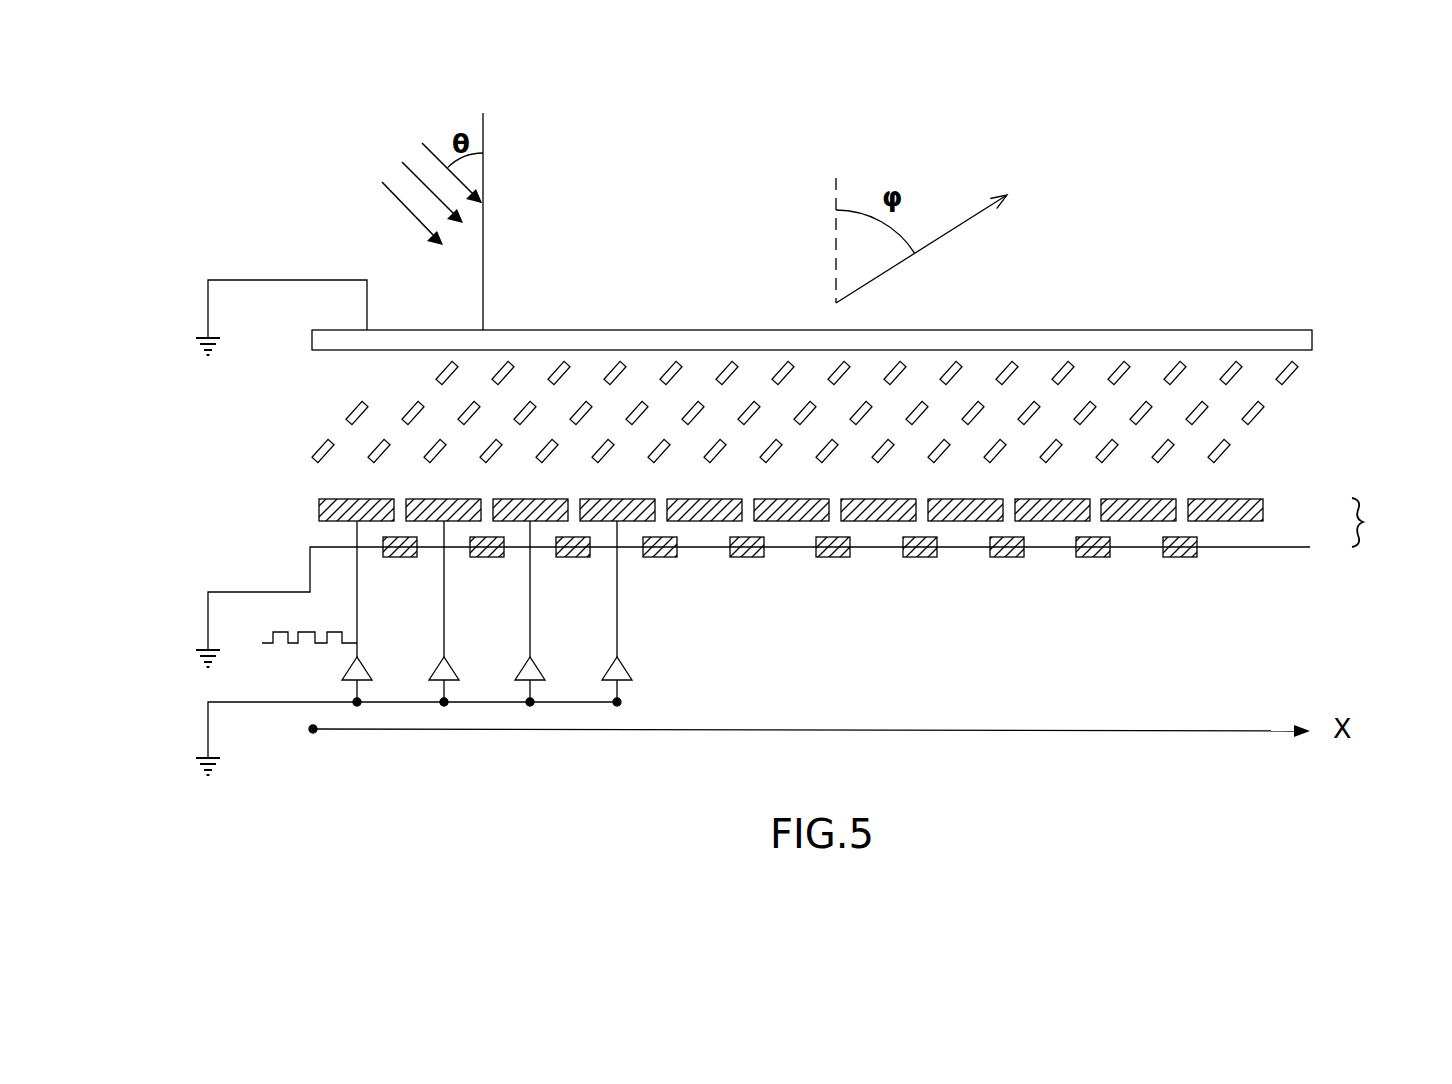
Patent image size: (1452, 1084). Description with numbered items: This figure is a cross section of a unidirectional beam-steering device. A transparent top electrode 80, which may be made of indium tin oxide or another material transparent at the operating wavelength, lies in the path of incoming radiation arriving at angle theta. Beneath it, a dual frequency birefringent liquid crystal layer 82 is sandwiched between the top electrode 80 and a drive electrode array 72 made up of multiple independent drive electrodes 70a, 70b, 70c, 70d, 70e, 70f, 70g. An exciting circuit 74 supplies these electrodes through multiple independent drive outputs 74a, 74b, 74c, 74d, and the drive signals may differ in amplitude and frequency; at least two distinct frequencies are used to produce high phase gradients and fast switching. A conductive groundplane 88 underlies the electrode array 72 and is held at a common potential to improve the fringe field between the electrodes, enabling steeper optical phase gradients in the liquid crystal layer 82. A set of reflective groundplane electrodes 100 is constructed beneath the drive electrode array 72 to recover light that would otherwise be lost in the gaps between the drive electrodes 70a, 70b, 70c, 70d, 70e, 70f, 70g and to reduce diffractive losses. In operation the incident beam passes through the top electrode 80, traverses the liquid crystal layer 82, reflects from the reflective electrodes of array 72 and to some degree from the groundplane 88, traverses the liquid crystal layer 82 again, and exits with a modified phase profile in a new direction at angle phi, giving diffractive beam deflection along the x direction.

The drive electrode 70a is at (367, 522).
The drive electrode 70b is at (452, 522).
The drive electrode 70c is at (538, 522).
The drive electrode 70d is at (625, 522).
The drive electrode 70e is at (717, 522).
The drive electrode 70f is at (802, 522).
The drive electrode 70g is at (887, 522).
The drive electrode array 72 is at (1272, 536).
The exciting circuit 74 is at (399, 650).
The drive output 74a is at (358, 612).
The drive output 74b is at (445, 612).
The drive output 74c is at (532, 612).
The drive output 74d is at (619, 612).
The transparent top electrode 80 is at (1223, 330).
The dual frequency birefringent liquid crystal layer 82 is at (302, 497).
The conductive groundplane 88 is at (1363, 522).
The reflective groundplane electrodes 100 is at (305, 532).